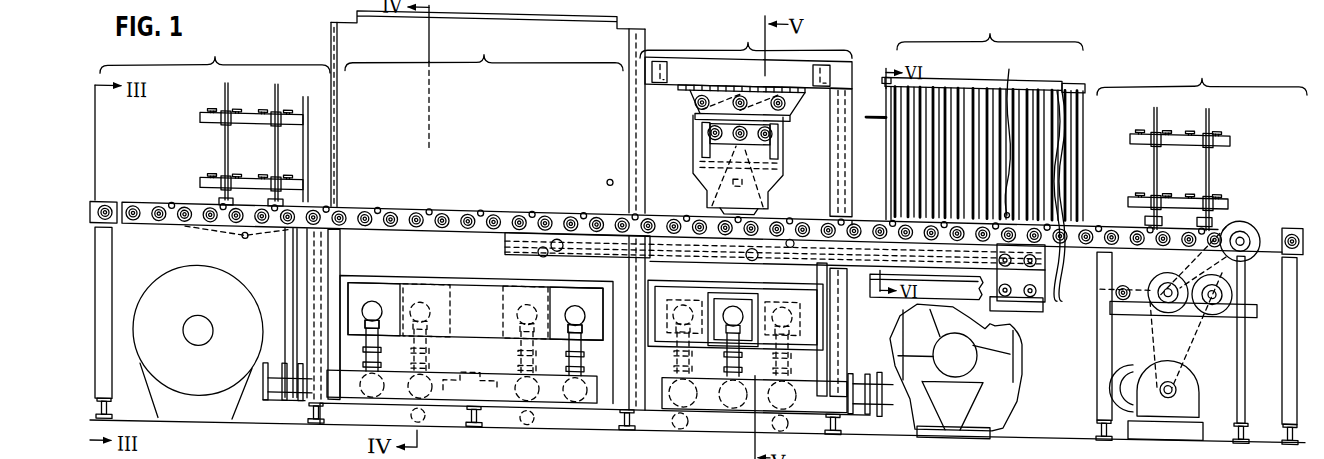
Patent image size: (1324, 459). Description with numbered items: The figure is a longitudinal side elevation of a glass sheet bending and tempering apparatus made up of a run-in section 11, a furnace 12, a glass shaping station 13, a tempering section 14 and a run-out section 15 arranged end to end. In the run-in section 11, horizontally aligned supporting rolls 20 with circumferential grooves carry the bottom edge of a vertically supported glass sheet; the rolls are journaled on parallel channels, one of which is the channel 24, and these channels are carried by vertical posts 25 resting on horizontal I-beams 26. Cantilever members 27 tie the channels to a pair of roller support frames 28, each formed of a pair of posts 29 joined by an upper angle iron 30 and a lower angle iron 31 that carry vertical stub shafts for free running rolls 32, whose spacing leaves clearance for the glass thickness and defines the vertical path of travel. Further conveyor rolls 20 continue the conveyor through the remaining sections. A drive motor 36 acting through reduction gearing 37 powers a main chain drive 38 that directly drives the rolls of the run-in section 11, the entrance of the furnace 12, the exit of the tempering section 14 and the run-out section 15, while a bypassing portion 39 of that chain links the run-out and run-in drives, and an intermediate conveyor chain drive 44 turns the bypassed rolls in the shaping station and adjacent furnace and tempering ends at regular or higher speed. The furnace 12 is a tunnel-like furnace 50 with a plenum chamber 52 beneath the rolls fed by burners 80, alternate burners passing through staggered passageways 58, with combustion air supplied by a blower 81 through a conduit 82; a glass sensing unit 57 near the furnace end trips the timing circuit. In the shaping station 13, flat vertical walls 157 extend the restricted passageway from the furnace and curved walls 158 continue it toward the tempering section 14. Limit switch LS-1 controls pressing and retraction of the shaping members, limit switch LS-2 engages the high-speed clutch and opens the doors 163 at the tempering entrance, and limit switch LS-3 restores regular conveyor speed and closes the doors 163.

The run-in section 11 is at (215, 54).
The furnace 12 is at (484, 48).
The glass shaping station 13 is at (746, 115).
The tempering section 14 is at (985, 118).
The run-out section 15 is at (1202, 141).
The supporting rolls 20 is at (159, 202).
The channel 24 is at (106, 201).
The vertical posts 25 is at (113, 260).
The horizontal I-beams 26 is at (109, 410).
The cantilever members 27 is at (218, 198).
The roller support frames 28 is at (209, 136).
The posts 29 is at (271, 138).
The upper angle iron 30 is at (202, 114).
The lower angle iron 31 is at (201, 179).
The free running rolls 32 is at (263, 172).
The drive motor 36 is at (1190, 375).
The reduction gearing 37 is at (1172, 291).
The main chain drive 38 is at (398, 201).
The bypassing portion 39 is at (817, 234).
The intermediate conveyor chain drive 44 is at (870, 209).
The furnace 50 is at (490, 128).
The plenum chamber 52 is at (453, 267).
The glass sensing unit 57 is at (606, 169).
The passageways 58 is at (368, 294).
The burners 80 is at (378, 306).
The blower 81 is at (202, 373).
The conduit 82 is at (248, 386).
The flat vertical walls 157 is at (672, 98).
The curved walls 158 is at (866, 99).
The doors 163 is at (881, 149).
The limit switch LS-1 is at (701, 140).
The limit switch LS-2 is at (784, 142).
The limit switch LS-3 is at (1034, 175).